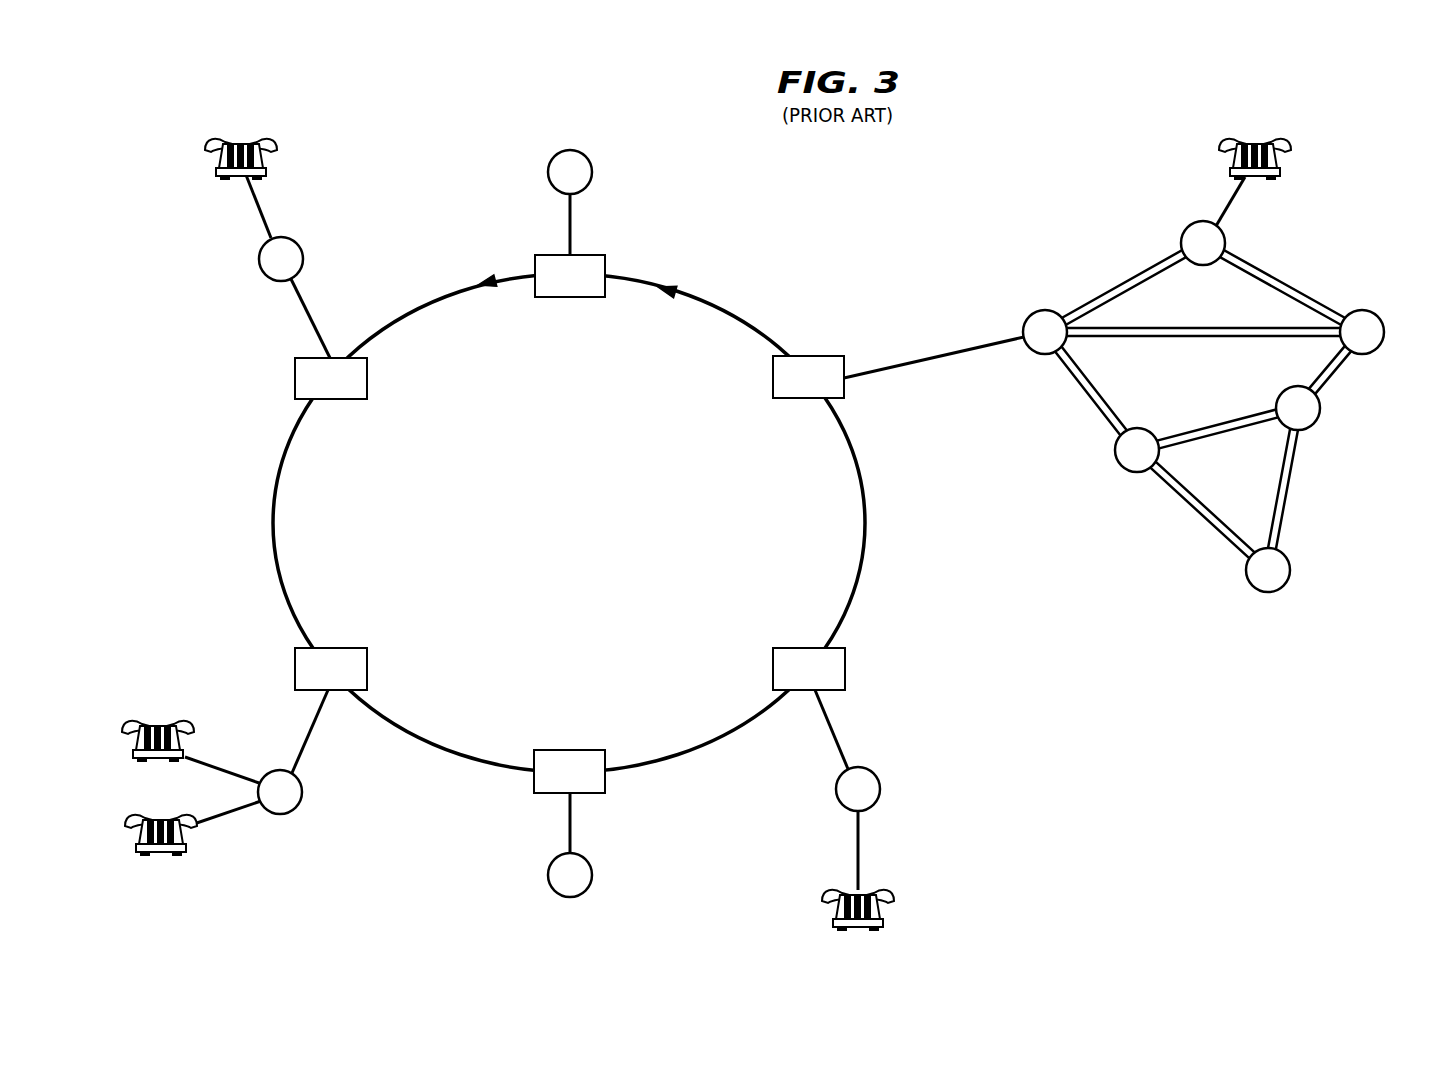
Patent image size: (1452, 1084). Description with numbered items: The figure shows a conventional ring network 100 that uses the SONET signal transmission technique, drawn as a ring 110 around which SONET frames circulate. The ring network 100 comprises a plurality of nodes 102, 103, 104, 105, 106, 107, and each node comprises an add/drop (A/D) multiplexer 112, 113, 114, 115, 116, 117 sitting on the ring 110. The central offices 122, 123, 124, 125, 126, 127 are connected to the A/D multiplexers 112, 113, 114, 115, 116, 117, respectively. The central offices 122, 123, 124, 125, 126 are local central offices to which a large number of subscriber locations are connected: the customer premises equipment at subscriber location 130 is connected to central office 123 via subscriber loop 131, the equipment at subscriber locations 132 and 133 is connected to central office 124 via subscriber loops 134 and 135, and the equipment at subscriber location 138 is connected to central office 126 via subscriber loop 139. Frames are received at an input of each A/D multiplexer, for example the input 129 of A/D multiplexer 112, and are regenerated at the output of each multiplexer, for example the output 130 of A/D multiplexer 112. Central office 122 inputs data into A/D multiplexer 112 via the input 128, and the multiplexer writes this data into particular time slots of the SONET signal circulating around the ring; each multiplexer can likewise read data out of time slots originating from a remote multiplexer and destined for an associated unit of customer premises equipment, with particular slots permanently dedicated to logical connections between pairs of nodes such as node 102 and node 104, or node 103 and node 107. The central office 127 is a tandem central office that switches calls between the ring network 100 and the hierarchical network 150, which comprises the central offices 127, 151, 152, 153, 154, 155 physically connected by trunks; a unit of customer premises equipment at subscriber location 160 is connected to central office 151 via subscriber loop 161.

The ring network 100 is at (238, 430).
The node 102 is at (606, 205).
The node 103 is at (406, 264).
The node 104 is at (250, 683).
The node 105 is at (530, 862).
The node 106 is at (805, 748).
The node 107 is at (968, 368).
The ring 110 is at (395, 330).
The add/drop (A/D) multiplexer 112 is at (576, 297).
The add/drop (A/D) multiplexer 113 is at (334, 399).
The add/drop (A/D) multiplexer 114 is at (350, 648).
The add/drop (A/D) multiplexer 115 is at (585, 750).
The add/drop (A/D) multiplexer 116 is at (800, 648).
The add/drop (A/D) multiplexer 117 is at (790, 398).
The central office 122 is at (590, 163).
The central office 123 is at (304, 256).
The central office 124 is at (273, 771).
The central office 125 is at (592, 866).
The central office 126 is at (873, 773).
The tandem central office 127 is at (1043, 307).
The input 128 is at (574, 256).
The input 129 is at (608, 293).
The subscriber location 130 is at (243, 135).
The subscriber loop 131 is at (281, 213).
The subscriber location 132 is at (170, 718).
The subscriber location 133 is at (175, 857).
The subscriber loop 134 is at (243, 770).
The subscriber loop 135 is at (238, 815).
The subscriber location 138 is at (893, 915).
The subscriber loop 139 is at (860, 855).
The hierarchical network 150 is at (1127, 250).
The central office 151 is at (1197, 220).
The central office 152 is at (1378, 315).
The central office 153 is at (1320, 408).
The central office 154 is at (1290, 571).
The central office 155 is at (1150, 432).
The subscriber location 160 is at (1282, 145).
The subscriber loop 161 is at (1240, 200).